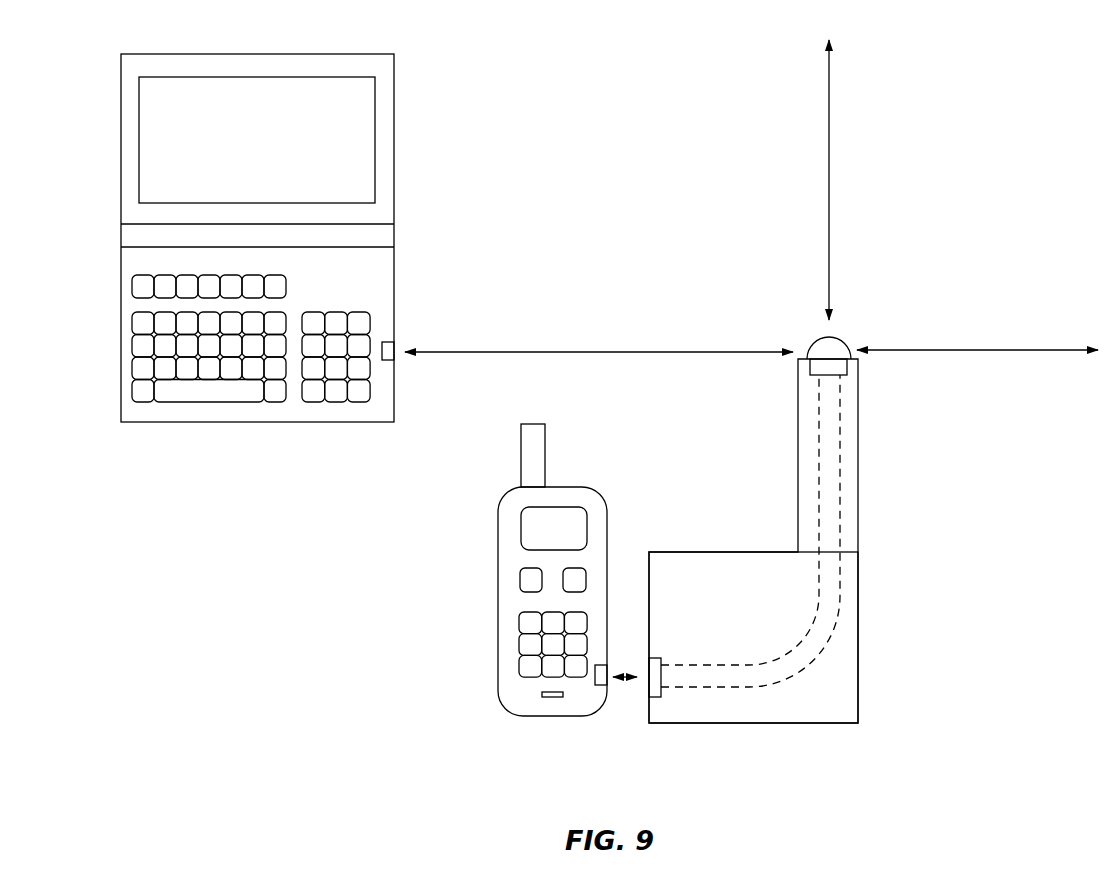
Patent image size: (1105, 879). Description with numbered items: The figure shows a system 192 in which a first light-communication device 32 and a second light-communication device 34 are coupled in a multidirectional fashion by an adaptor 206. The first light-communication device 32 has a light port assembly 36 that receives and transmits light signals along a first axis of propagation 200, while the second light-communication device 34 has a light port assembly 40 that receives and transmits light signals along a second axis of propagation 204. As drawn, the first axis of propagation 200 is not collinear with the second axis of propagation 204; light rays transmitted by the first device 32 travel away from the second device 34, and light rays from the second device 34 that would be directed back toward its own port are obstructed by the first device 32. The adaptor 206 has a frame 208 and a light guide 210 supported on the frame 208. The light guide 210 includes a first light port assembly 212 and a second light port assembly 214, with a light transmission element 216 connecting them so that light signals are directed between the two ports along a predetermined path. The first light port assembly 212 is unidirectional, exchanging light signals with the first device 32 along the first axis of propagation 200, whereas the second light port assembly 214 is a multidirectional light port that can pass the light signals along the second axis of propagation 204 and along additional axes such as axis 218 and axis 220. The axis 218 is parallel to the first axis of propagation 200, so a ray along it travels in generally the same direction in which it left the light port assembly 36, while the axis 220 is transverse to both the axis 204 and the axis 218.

The system 192 is at (622, 110).
The second light-communication device 34 is at (385, 262).
The light port assembly 40 is at (393, 352).
The first light-communication device 32 is at (597, 521).
The light port assembly 36 is at (597, 686).
The first axis of propagation 200 is at (627, 683).
The second axis of propagation 204 is at (638, 352).
The adaptor 206 is at (880, 542).
The frame 208 is at (848, 650).
The light guide 210 is at (858, 487).
The first light port assembly 212 is at (658, 655).
The second light port assembly 214 is at (857, 368).
The light transmission element 216 is at (826, 600).
The axis 218 is at (983, 350).
The second axis 220 is at (829, 180).